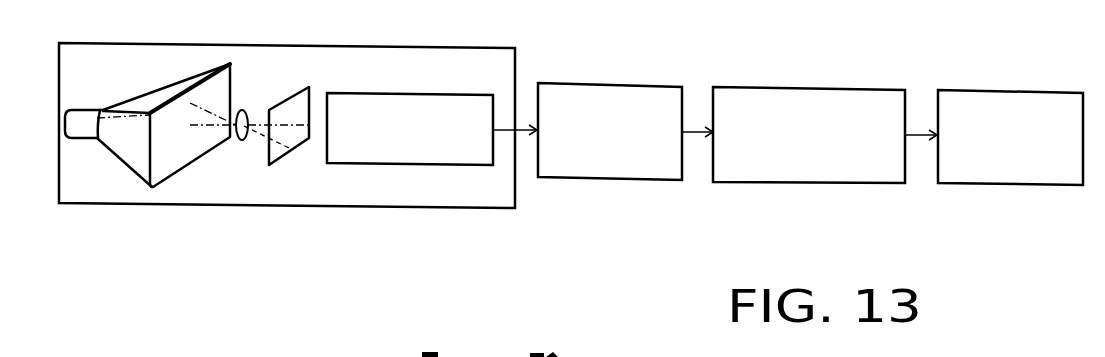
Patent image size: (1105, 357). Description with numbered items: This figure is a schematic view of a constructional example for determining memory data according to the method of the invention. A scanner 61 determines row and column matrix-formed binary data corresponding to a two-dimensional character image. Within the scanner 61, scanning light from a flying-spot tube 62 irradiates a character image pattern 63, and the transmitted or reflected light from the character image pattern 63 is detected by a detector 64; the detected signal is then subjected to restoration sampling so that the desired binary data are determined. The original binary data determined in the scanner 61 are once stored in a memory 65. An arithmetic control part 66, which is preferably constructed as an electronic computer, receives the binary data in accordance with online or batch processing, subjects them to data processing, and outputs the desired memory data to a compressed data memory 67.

The scanner 61 is at (336, 43).
The flying-spot tube 62 is at (172, 88).
The character image pattern 63 is at (280, 105).
The detector 64 is at (428, 92).
The memory 65 is at (627, 67).
The arithmetic control part 66 is at (828, 72).
The compressed data memory 67 is at (1025, 77).